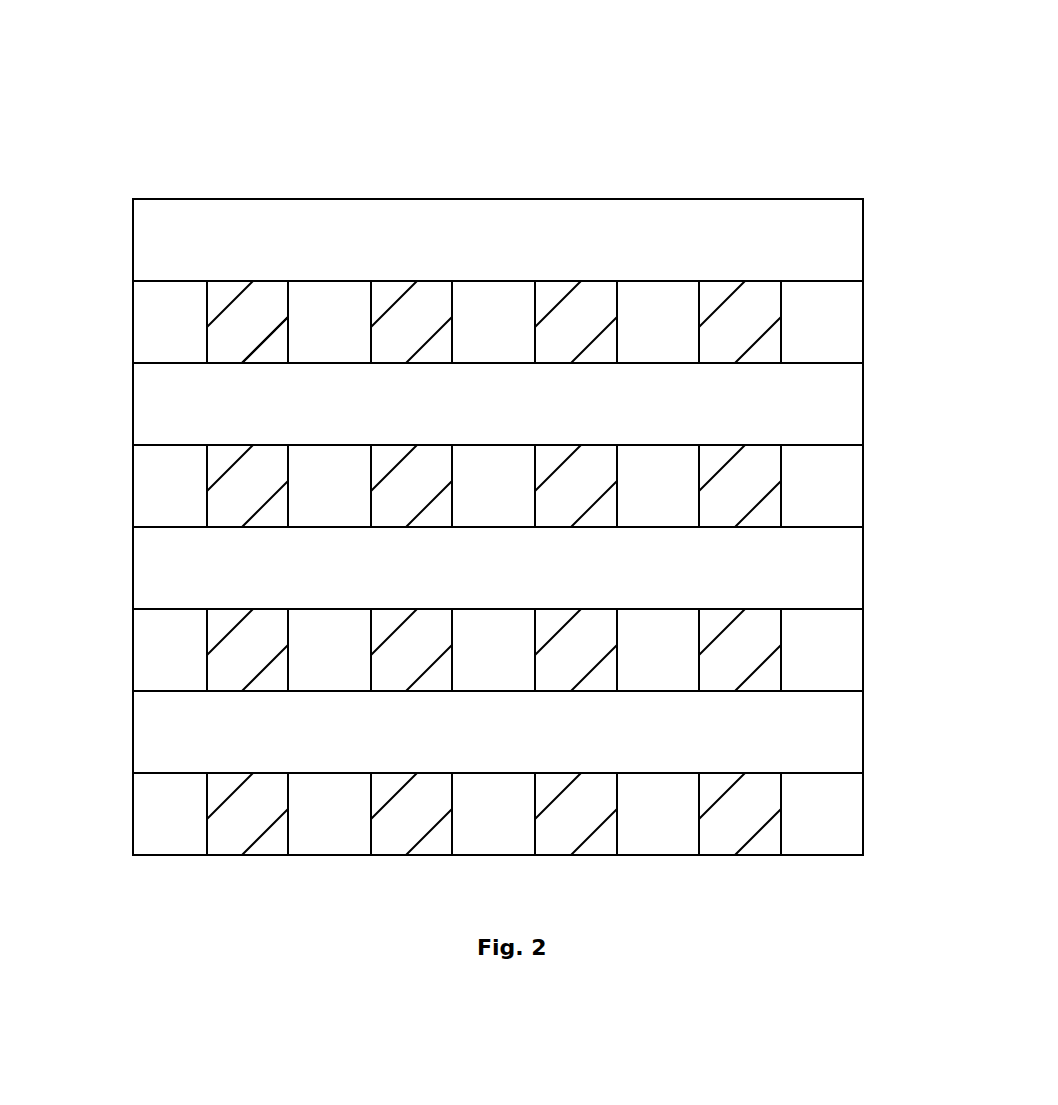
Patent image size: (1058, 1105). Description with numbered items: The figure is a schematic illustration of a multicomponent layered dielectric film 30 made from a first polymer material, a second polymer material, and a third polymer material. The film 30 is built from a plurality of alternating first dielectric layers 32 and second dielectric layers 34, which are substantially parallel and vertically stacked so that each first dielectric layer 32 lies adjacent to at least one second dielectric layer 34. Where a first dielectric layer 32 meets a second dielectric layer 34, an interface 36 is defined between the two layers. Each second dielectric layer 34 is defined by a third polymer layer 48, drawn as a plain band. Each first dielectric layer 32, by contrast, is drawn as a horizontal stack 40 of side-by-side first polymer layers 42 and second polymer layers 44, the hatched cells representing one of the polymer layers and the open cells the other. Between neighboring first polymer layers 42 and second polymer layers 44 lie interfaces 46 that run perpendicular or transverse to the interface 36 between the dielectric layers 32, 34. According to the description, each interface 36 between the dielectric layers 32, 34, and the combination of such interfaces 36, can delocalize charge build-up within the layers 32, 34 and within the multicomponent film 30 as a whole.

The multicomponent layered dielectric film 30 is at (466, 110).
The first dielectric layer 32 is at (863, 320).
The second dielectric layer 34 is at (863, 235).
The interface 36 is at (133, 281).
The horizontal stack 40 is at (133, 332).
The first polymer layer 42 is at (160, 365).
The second polymer layer 44 is at (243, 365).
The interface 46 is at (207, 365).
The third polymer layer 48 is at (133, 245).